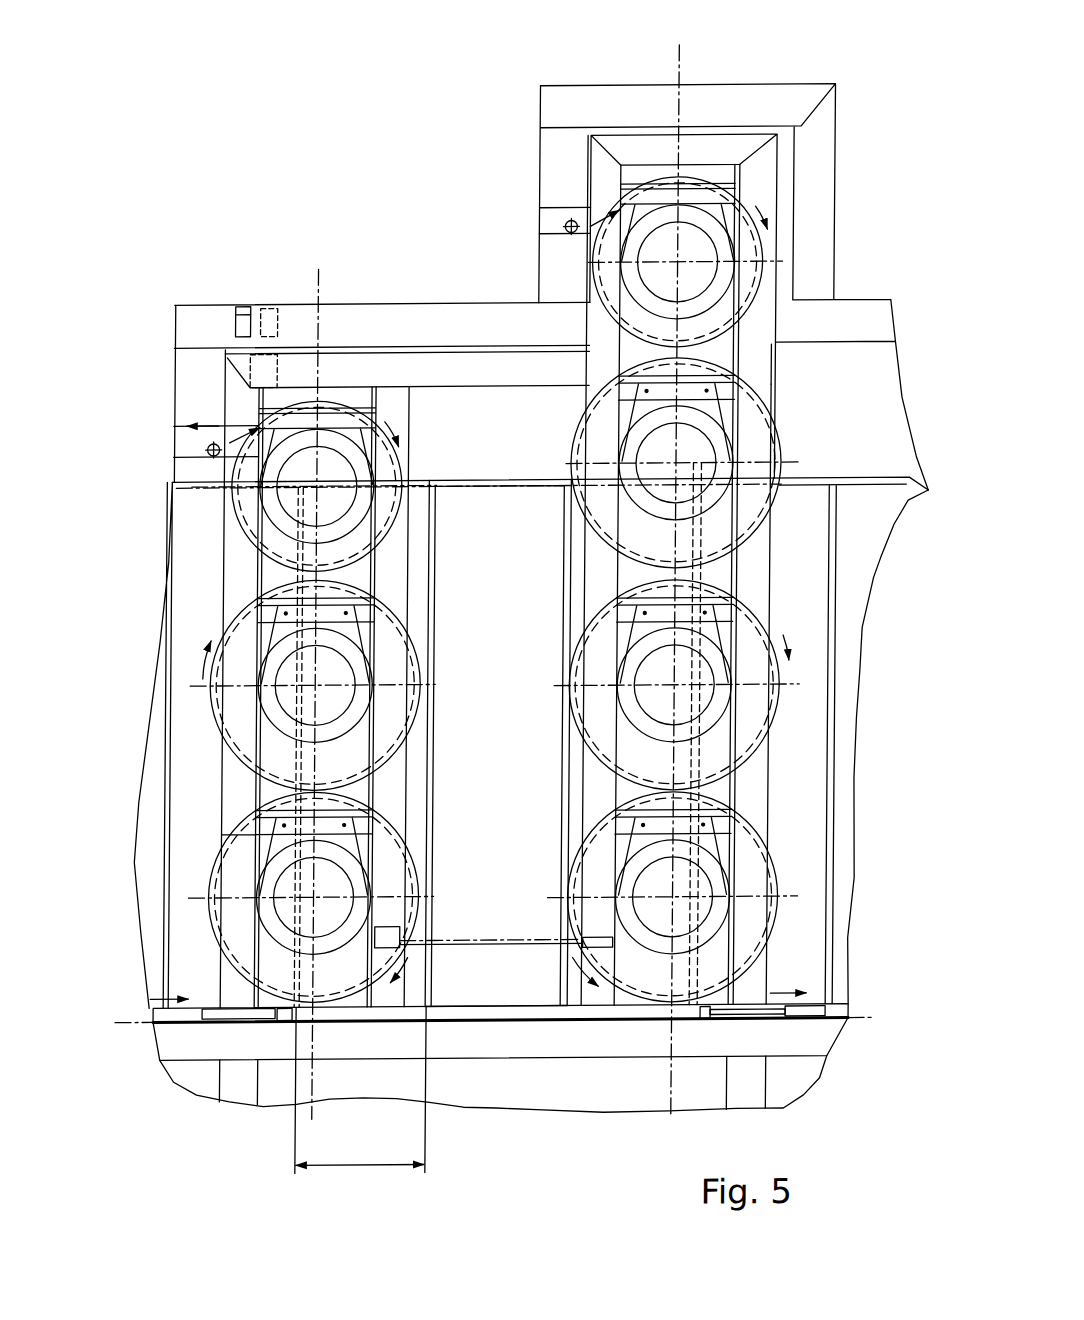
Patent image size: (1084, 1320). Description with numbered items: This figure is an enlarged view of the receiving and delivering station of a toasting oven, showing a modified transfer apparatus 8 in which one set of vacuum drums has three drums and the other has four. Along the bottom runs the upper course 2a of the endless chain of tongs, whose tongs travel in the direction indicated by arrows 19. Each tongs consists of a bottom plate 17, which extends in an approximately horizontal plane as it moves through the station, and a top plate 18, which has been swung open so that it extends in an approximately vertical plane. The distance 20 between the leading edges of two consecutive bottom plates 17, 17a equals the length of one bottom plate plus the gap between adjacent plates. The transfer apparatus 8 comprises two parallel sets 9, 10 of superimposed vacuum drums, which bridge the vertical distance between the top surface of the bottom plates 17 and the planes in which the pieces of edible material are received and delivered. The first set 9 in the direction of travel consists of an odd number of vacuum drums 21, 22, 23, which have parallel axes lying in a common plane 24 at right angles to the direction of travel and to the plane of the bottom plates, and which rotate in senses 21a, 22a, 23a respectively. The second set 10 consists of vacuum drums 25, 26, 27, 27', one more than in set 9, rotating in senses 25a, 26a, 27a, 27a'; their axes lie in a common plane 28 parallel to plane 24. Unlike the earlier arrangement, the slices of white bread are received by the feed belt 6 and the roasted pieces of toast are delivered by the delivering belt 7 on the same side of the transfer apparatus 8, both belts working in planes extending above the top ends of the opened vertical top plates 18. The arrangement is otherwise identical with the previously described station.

The upper course 2a is at (871, 1021).
The feed belt 6 is at (541, 207).
The delivering belt 7 is at (177, 426).
The transfer apparatus 8 is at (461, 298).
The set of vacuum drums 9 is at (288, 298).
The set of vacuum drums 10 is at (515, 108).
The bottom plate 17 is at (373, 1013).
The bottom plate 17a is at (507, 1013).
The top plate 18 is at (853, 567).
The arrows indicating direction of travel 19 is at (163, 993).
The distance 20 is at (372, 1165).
The vacuum drum 21 is at (235, 940).
The sense of rotation 21a is at (397, 984).
The vacuum drum 22 is at (212, 695).
The sense of rotation 22a is at (197, 655).
The vacuum drum 23 is at (385, 469).
The sense of rotation 23a is at (387, 426).
The common plane 24 is at (319, 281).
The vacuum drum 25 is at (605, 850).
The sense of rotation 25a is at (585, 975).
The vacuum drum 26 is at (773, 735).
The sense of rotation 26a is at (792, 651).
The vacuum drum 27 is at (660, 463).
The sense of rotation 27a is at (553, 426).
The vacuum drum 27' is at (747, 261).
The sense of rotation 27a' is at (832, 197).
The common plane 28 is at (683, 56).